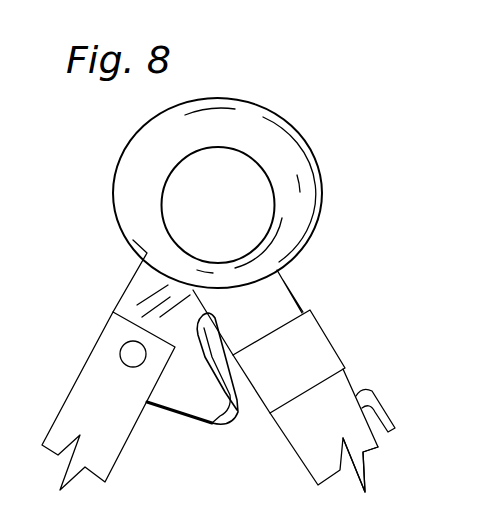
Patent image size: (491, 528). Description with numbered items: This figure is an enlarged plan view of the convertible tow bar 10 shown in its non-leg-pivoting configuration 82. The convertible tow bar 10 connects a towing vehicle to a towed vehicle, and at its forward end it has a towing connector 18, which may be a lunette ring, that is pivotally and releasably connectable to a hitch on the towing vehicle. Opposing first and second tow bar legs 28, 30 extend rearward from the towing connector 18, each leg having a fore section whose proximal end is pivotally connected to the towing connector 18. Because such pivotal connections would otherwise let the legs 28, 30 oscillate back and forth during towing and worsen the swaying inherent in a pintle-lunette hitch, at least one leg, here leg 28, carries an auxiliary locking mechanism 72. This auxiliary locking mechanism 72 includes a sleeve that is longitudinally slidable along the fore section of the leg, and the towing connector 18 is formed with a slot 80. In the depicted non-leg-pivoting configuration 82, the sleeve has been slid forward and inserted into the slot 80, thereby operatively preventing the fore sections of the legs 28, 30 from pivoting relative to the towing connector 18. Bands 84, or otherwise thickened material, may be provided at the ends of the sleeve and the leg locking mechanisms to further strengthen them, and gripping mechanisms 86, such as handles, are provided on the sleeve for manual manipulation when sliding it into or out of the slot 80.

The convertible tow bar 10 is at (236, 160).
The towing connector 18 is at (317, 167).
The first tow bar leg 28 is at (313, 298).
The second tow bar leg 30 is at (68, 412).
The auxiliary locking mechanism 72 is at (364, 440).
The slot 80 is at (263, 433).
The non-leg-pivoting configuration 82 is at (380, 148).
The bands 84 is at (325, 332).
The gripping mechanisms 86 is at (370, 391).